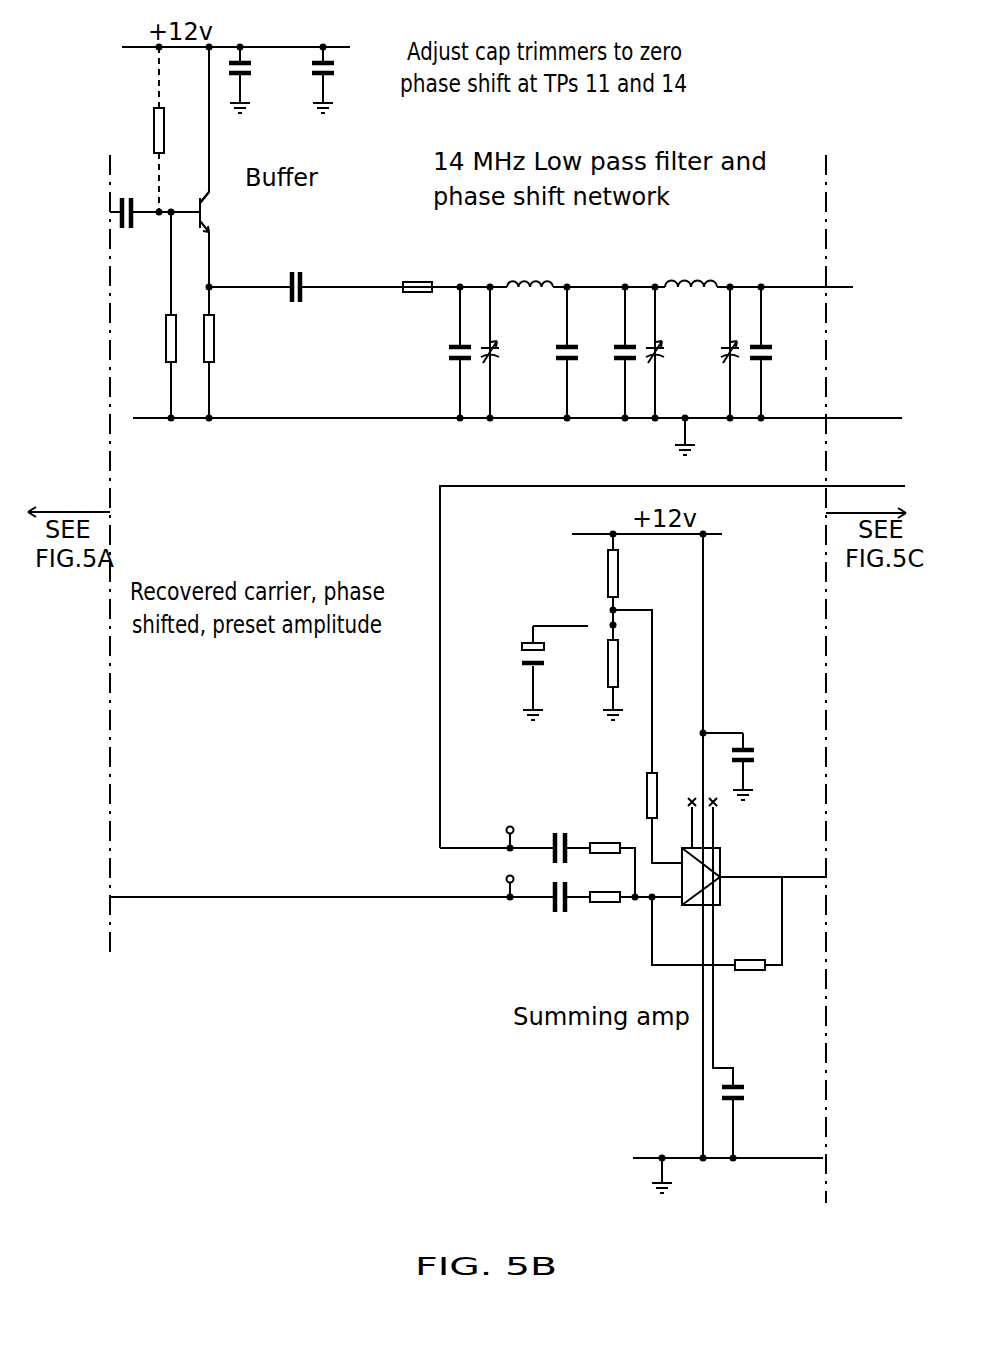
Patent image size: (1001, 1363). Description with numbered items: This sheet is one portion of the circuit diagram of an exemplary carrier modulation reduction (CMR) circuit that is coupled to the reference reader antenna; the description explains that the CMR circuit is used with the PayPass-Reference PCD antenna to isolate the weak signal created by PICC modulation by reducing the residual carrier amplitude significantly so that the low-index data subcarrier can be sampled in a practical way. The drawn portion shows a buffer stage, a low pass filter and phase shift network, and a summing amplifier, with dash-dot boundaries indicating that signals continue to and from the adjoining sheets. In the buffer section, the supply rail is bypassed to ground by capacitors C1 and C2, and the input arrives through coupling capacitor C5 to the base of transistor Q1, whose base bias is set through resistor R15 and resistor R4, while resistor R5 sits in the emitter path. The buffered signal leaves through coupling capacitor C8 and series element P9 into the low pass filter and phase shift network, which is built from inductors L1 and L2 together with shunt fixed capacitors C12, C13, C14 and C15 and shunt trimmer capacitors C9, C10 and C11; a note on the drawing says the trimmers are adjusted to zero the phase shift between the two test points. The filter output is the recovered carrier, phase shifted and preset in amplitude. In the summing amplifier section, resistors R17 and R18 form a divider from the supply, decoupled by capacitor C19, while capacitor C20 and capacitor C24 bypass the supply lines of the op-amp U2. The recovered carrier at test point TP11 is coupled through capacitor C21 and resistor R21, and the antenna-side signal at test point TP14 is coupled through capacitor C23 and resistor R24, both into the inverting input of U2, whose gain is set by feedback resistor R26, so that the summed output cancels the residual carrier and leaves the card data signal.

The bypass capacitor C1 is at (263, 80).
The bypass capacitor C2 is at (346, 80).
The bias resistor R15 is at (183, 129).
The coupling capacitor C5 is at (127, 198).
The buffer transistor Q1 is at (224, 212).
The bias resistor R4 is at (156, 338).
The emitter resistor R5 is at (227, 338).
The coupling capacitor C8 is at (299, 271).
The series resistor P9 is at (418, 267).
The filter inductor L1 is at (530, 266).
The filter inductor L2 is at (691, 266).
The filter capacitor C12 is at (438, 352).
The trimmer capacitor C9 is at (494, 369).
The filter capacitor C13 is at (554, 352).
The filter capacitor C14 is at (612, 352).
The trimmer capacitor C10 is at (663, 369).
The trimmer capacitor C11 is at (738, 369).
The filter capacitor C15 is at (782, 352).
The bias divider resistor R17 is at (638, 572).
The bias divider resistor R18 is at (595, 663).
The decoupling capacitor C19 is at (515, 658).
The supply bypass capacitor C20 is at (770, 757).
The test point 11 TP11 is at (481, 830).
The test point 14 TP14 is at (481, 879).
The coupling capacitor C21 is at (563, 833).
The summing input resistor R21 is at (615, 830).
The coupling capacitor C23 is at (563, 911).
The summing input resistor R24 is at (613, 916).
The summing amplifier op-amp U2 is at (721, 864).
The feedback resistor R26 is at (756, 950).
The supply bypass capacitor C24 is at (759, 1092).